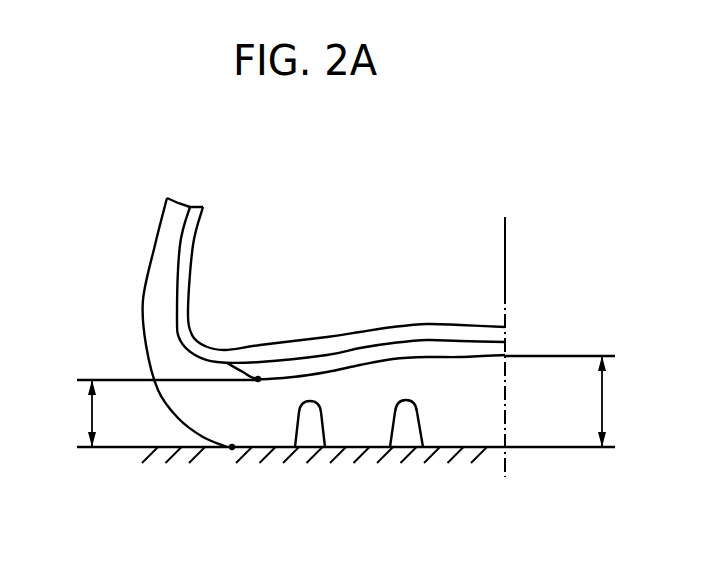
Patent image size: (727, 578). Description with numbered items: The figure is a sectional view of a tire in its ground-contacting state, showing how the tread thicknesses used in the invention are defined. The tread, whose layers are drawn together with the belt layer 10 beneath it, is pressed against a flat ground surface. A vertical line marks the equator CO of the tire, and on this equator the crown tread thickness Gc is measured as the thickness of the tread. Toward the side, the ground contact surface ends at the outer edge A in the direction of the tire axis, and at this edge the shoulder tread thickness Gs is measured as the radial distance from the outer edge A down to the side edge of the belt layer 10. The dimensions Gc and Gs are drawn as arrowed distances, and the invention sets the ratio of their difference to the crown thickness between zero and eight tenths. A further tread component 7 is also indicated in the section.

The flexible blade 7 is at (500, 335).
The belt layer 10 is at (500, 350).
The equator of the tire CO is at (505, 332).
The outer edge of the ground contact surface A is at (231, 447).
The shoulder tread thickness Gs is at (92, 415).
The crown tread thickness Gc is at (603, 412).